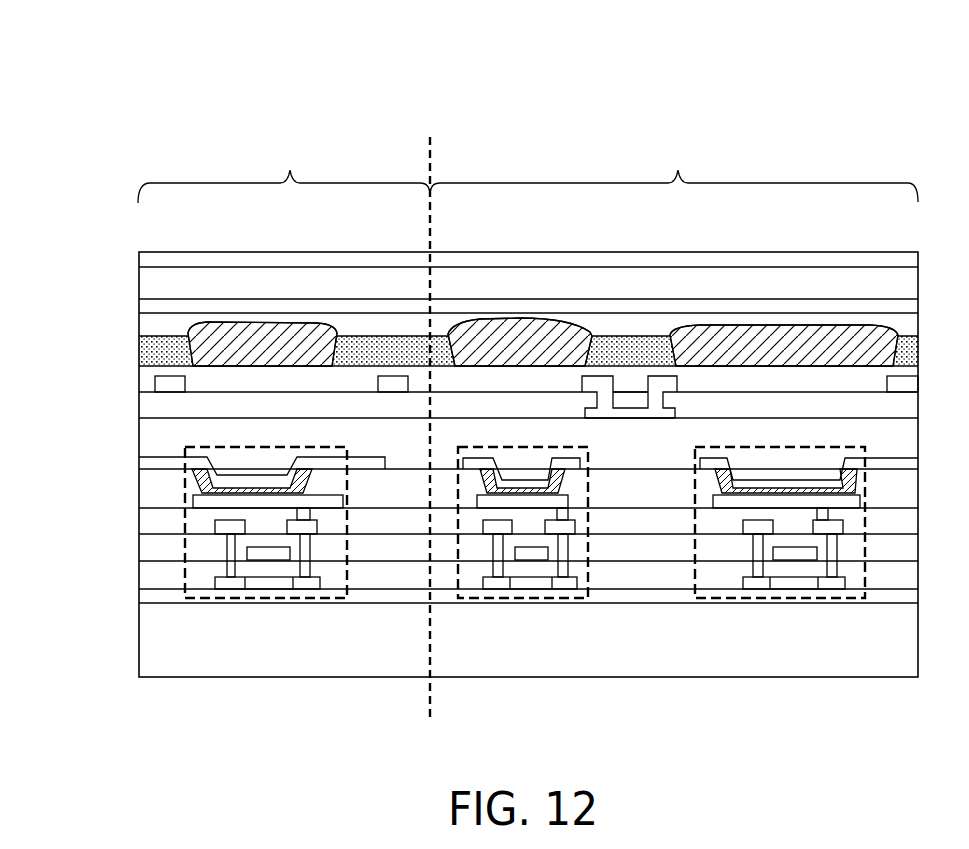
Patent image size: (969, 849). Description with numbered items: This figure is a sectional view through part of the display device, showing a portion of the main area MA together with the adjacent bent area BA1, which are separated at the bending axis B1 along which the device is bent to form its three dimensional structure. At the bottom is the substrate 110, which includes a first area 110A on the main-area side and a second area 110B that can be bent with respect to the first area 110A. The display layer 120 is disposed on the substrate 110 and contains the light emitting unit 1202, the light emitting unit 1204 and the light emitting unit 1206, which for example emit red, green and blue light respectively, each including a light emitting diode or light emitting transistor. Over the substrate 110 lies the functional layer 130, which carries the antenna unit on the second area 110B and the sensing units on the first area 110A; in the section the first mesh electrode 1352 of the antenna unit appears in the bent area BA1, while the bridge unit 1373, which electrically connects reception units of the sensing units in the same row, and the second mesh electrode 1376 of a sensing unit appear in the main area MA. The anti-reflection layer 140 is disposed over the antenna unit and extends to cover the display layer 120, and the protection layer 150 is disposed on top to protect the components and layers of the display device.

The substrate 110 is at (698, 653).
The first area 110A is at (674, 165).
The second area 110B is at (284, 166).
The display layer 120 is at (139, 457).
The light emitting unit 1202 is at (257, 598).
The light emitting unit 1204 is at (532, 598).
The light emitting unit 1206 is at (773, 598).
The functional layer 130 is at (139, 367).
The first mesh electrode 1352 is at (173, 383).
The bridge unit 1373 is at (640, 414).
The second mesh electrode 1376 is at (899, 382).
The anti-reflection layer 140 is at (139, 314).
The protection layer 150 is at (139, 253).
The bent area BA1 is at (222, 130).
The main area MA is at (790, 130).
The bending axis B1 is at (426, 409).